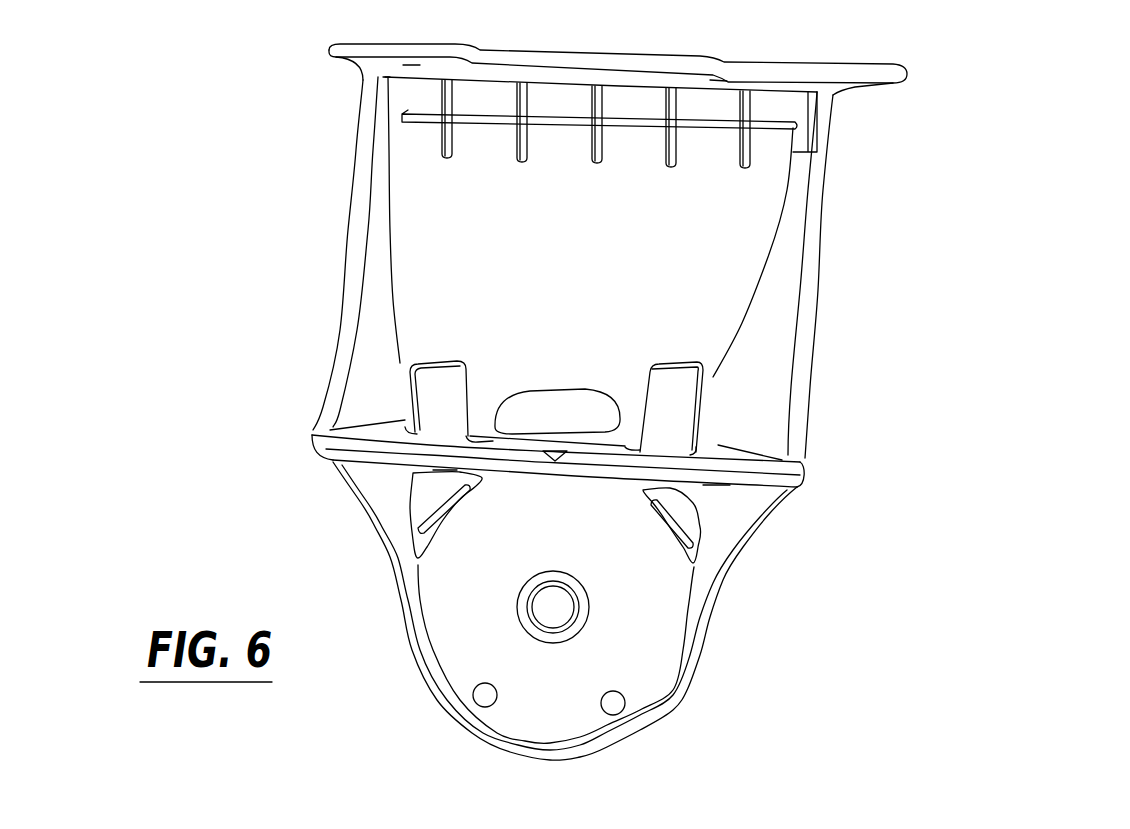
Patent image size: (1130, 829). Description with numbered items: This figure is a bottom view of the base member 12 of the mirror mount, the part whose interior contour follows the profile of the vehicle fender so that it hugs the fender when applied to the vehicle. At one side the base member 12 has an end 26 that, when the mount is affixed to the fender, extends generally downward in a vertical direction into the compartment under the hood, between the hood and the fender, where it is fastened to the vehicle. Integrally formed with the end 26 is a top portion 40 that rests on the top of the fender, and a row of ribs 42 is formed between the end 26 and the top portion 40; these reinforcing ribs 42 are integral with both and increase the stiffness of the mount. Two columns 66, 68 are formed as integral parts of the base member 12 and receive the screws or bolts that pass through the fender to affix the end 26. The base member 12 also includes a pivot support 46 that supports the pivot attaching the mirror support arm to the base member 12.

The base member 12 is at (922, 256).
The end 26 is at (884, 84).
The top portion 40 is at (427, 200).
The ribs 42 is at (670, 155).
The pivot support 46 is at (627, 650).
The column 66 is at (675, 402).
The column 68 is at (440, 383).